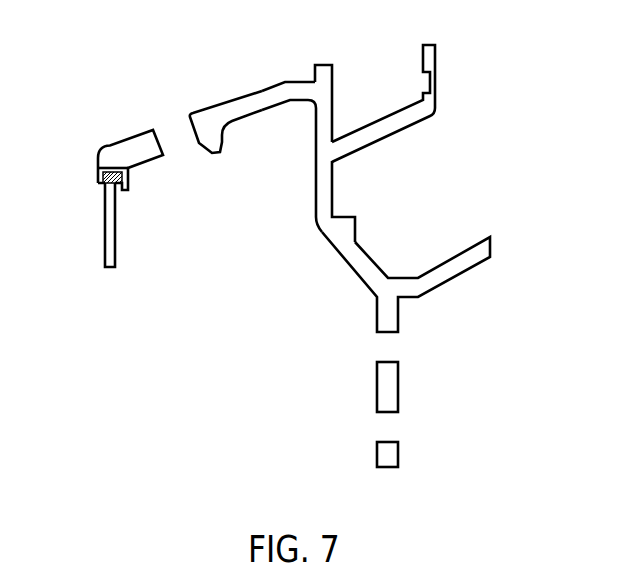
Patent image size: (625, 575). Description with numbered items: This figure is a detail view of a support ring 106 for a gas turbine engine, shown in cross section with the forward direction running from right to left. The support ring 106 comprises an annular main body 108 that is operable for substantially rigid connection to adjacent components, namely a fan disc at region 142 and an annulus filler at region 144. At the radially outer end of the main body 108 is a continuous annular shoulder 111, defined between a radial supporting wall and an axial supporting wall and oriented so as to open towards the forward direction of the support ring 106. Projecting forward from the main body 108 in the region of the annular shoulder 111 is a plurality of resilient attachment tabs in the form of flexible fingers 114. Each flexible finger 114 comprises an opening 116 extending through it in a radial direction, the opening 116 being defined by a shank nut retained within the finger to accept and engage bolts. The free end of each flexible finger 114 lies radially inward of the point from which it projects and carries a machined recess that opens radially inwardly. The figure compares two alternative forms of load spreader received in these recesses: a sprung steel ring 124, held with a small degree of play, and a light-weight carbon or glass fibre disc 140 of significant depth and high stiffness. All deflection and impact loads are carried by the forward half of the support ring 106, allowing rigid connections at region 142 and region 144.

The support ring 106 is at (290, 320).
The annular main body 108 is at (380, 185).
The continuous annular shoulder 111 is at (298, 72).
The flexible fingers 114 is at (217, 103).
The opening 116 is at (179, 148).
The sprung steel ring 124 is at (103, 184).
The carbon fibre or glass fibre disc 140 is at (108, 248).
The region 142 is at (503, 262).
The region 144 is at (480, 120).